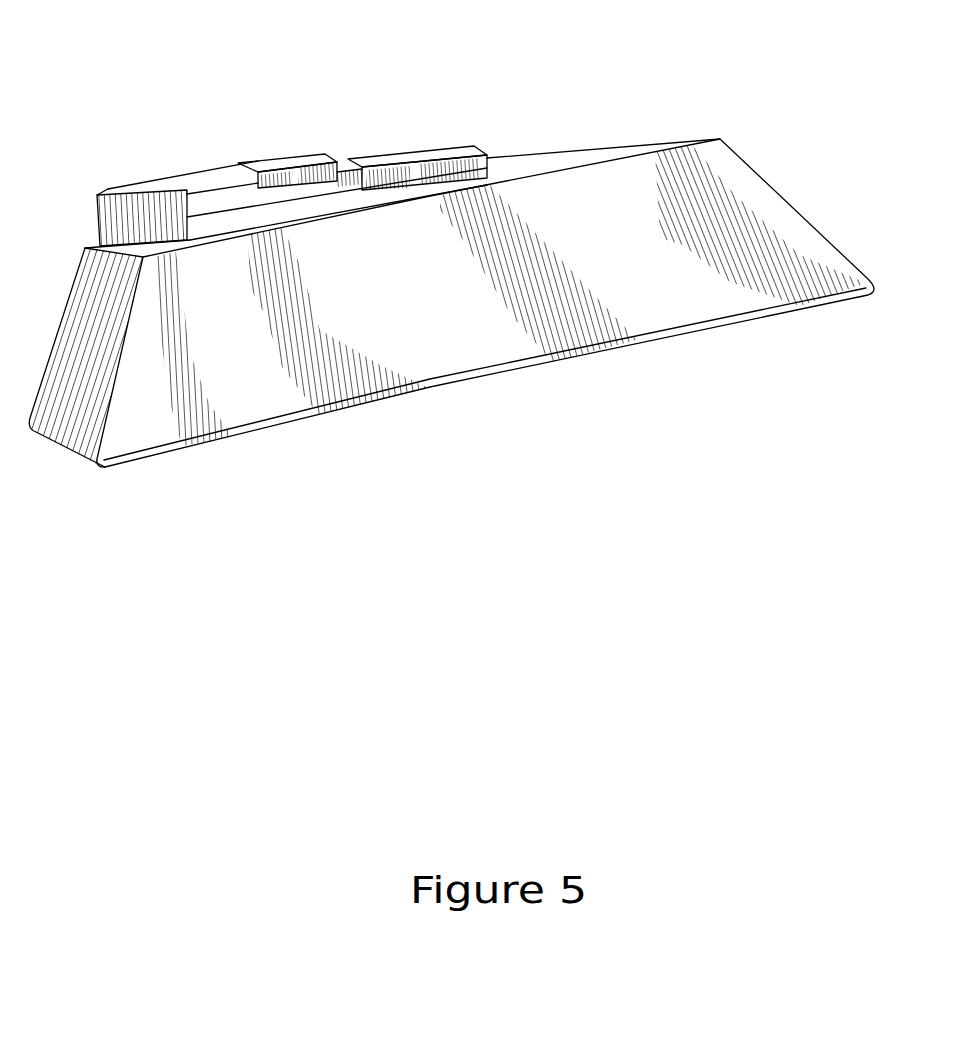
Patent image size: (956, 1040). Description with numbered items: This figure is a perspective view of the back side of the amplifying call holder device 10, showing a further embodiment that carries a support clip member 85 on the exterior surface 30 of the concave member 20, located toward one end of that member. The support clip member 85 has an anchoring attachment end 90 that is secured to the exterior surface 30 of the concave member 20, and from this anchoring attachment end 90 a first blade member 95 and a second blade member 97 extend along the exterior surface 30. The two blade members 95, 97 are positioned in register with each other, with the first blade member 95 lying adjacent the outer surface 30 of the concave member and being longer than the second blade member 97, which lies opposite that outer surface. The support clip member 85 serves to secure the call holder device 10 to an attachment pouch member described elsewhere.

The amplifying call holder device 10 is at (813, 335).
The concave member 20 is at (713, 223).
The exterior surface 30 is at (597, 157).
The support clip member 85 is at (240, 102).
The anchoring attachment end 90 is at (140, 193).
The first blade member 95 is at (427, 153).
The second blade member 97 is at (263, 155).